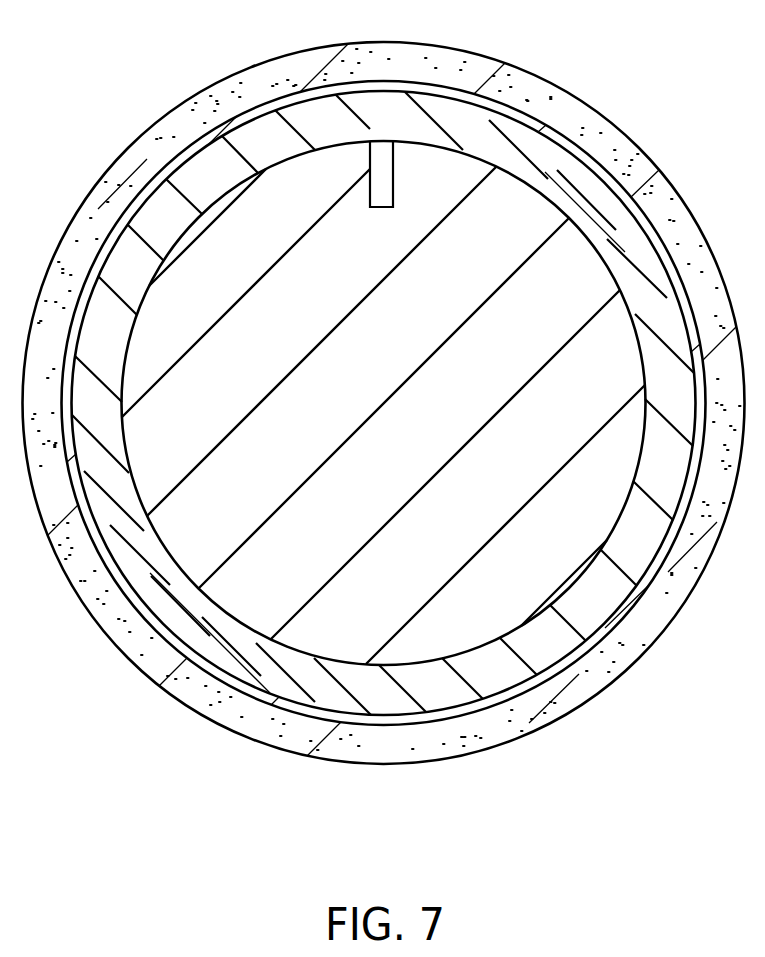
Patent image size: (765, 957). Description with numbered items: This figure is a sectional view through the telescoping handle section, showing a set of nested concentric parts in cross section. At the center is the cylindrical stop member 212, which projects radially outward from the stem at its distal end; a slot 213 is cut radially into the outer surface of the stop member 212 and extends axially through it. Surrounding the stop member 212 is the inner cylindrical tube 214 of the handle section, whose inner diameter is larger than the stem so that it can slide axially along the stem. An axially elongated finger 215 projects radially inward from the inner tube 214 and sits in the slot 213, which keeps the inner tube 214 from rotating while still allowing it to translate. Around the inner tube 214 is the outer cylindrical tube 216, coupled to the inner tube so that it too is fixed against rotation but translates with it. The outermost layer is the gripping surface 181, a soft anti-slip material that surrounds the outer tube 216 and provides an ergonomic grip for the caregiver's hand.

The gripping surface 181 is at (244, 72).
The cylindrical stop member 212 is at (278, 603).
The slot 213 is at (380, 157).
The inner cylindrical tube 214 is at (165, 213).
The axially elongated finger 215 is at (395, 183).
The outer cylindrical tube 216 is at (563, 123).